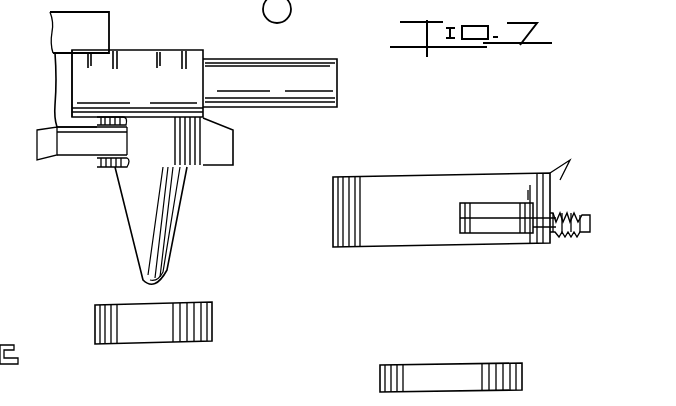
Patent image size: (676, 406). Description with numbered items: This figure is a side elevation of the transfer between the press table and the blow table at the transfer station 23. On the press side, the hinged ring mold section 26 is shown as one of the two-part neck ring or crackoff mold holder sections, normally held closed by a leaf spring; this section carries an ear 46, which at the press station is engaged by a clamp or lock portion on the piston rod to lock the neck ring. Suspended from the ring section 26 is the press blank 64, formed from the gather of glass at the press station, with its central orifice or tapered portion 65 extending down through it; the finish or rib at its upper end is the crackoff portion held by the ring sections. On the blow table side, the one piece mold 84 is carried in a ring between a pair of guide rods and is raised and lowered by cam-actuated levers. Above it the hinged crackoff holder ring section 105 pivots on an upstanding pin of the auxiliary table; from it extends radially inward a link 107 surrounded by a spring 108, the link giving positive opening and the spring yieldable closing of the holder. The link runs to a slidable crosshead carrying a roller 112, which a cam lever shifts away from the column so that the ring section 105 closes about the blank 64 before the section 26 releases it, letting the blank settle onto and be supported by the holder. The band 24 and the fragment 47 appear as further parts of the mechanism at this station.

The transfer station 23 is at (277, 11).
The ring band 24 is at (127, 347).
The ring mold section 26 is at (203, 162).
The ear 46 is at (236, 137).
The bracket fragment 47 is at (9, 182).
The press blank 64 is at (172, 257).
The tapered portion 65 is at (173, 217).
The one piece mold 84 is at (453, 365).
The ring section 105 is at (372, 183).
The link 107 is at (567, 210).
The spring 108 is at (573, 217).
The roller 112 is at (110, 32).